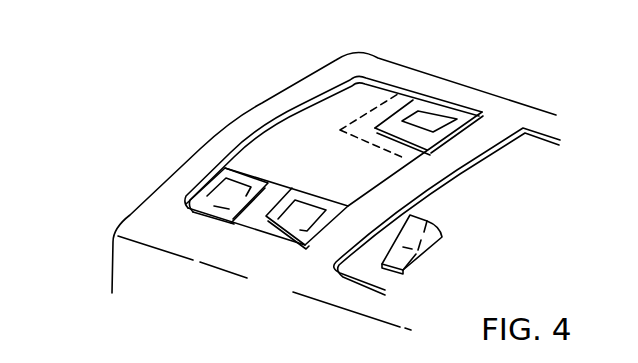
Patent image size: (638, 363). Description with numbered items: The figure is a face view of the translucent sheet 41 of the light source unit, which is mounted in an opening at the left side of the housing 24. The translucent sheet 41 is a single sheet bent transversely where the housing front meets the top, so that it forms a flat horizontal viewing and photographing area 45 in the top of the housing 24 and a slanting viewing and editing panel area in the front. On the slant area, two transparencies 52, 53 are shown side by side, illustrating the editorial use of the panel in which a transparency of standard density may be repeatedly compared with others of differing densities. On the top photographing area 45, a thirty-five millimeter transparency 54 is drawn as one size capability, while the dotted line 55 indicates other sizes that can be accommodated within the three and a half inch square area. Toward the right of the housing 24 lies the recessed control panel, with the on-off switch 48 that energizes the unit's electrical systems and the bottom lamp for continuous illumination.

The housing 24 is at (113, 253).
The translucent sheet 41 is at (284, 148).
The viewing and photographing flat and horizontal area 45 is at (330, 100).
The on-off switch 48 is at (428, 220).
The transparency 52 is at (212, 200).
The transparency 53 is at (291, 223).
The 35 millimeter transparency 54 is at (428, 120).
The dotted line 55 is at (370, 112).